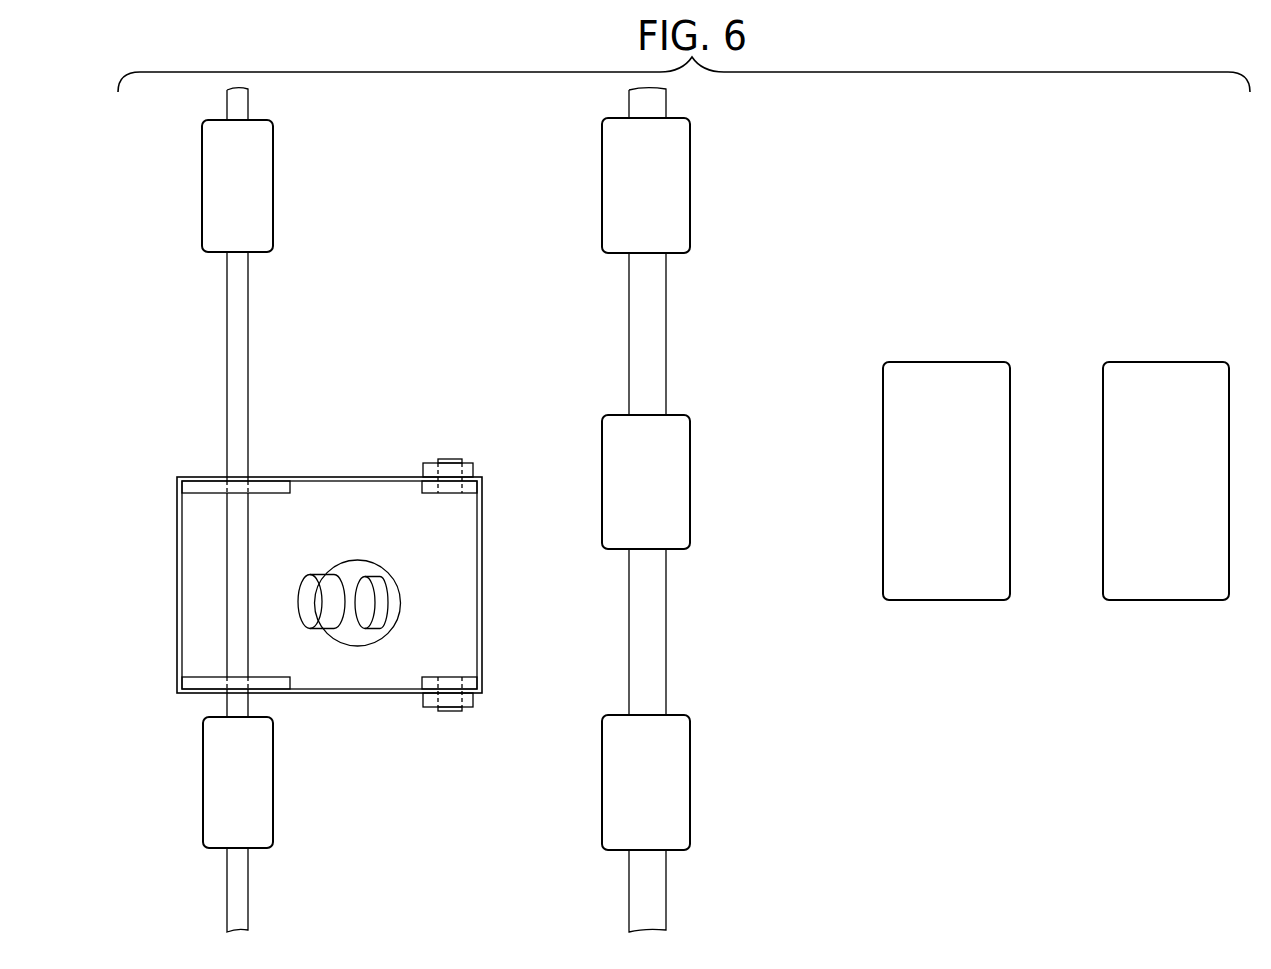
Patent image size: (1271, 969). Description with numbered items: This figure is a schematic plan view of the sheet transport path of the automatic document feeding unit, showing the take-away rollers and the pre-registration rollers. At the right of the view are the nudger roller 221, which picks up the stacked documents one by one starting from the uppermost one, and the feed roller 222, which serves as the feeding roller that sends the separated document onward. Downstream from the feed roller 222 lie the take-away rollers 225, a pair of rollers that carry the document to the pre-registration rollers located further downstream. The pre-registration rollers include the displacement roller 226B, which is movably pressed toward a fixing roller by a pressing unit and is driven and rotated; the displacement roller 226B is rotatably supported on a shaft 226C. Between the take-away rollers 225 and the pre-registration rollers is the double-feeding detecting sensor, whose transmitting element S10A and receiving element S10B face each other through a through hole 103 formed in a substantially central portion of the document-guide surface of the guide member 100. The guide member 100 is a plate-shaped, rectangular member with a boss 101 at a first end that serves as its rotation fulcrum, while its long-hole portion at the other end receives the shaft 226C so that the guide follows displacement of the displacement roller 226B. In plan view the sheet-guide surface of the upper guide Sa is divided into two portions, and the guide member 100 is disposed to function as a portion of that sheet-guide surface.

The displacement roller 226B is at (257, 207).
The shaft 226C is at (236, 428).
The take-away rollers 225 is at (598, 393).
The feed roller 222 is at (907, 392).
The nudger roller 221 is at (1127, 392).
The guide member 100 is at (327, 498).
The boss 101 is at (452, 456).
The through hole 103 is at (352, 632).
The receiving element S10B is at (315, 602).
The transmitting element S10A is at (368, 590).
The upper guide Sa is at (428, 270).